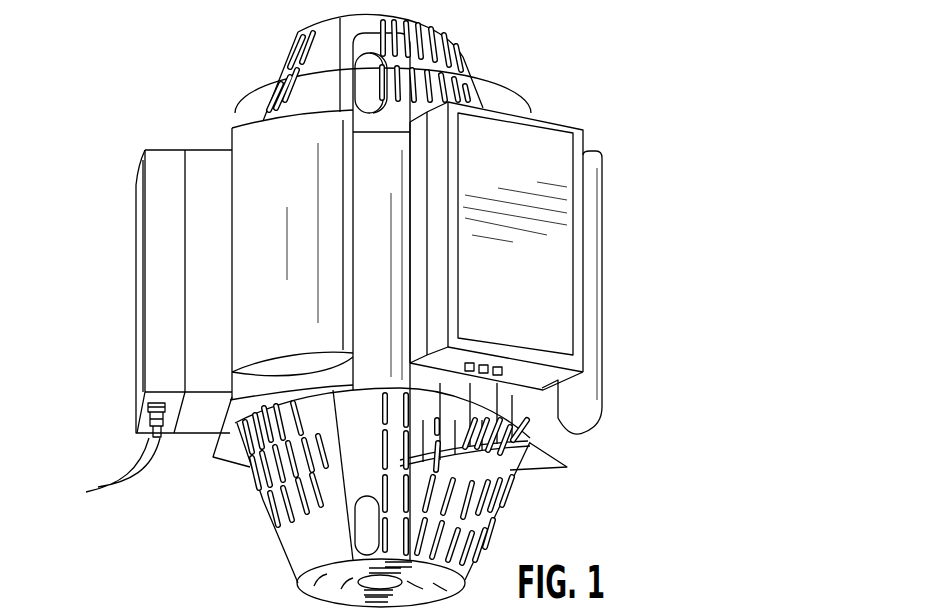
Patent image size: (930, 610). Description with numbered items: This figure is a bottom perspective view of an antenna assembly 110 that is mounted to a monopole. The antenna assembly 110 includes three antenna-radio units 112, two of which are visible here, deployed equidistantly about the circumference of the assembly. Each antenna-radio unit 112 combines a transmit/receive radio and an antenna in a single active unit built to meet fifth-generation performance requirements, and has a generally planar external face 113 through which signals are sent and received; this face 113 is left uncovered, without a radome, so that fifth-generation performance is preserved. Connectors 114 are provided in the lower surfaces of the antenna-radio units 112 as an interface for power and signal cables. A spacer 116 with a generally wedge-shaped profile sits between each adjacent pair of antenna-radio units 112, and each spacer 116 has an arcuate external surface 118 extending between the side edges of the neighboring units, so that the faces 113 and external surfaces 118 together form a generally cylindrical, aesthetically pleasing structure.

The antenna assembly 110 is at (670, 262).
The antenna-radio unit 112 is at (550, 142).
The external face 113 is at (548, 252).
The connector 114 is at (104, 456).
The spacer 116 is at (580, 392).
The arcuate external surface 118 is at (250, 172).